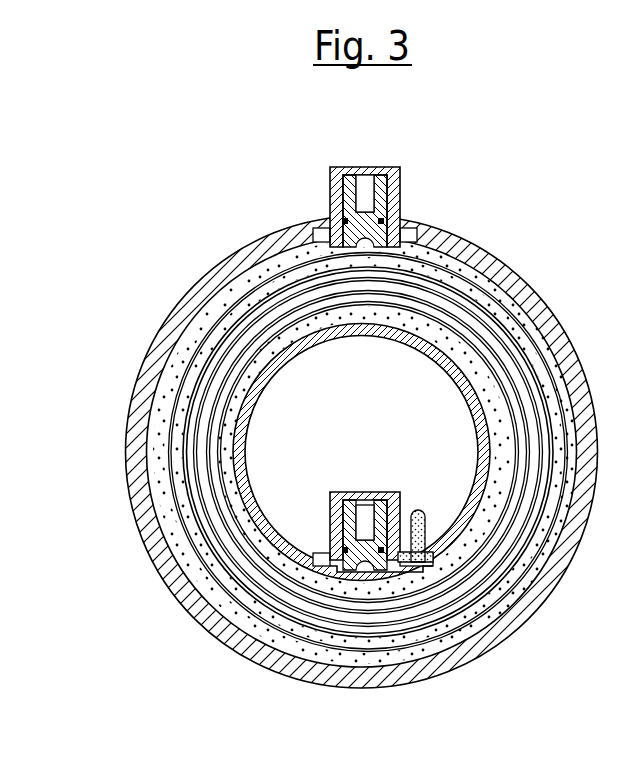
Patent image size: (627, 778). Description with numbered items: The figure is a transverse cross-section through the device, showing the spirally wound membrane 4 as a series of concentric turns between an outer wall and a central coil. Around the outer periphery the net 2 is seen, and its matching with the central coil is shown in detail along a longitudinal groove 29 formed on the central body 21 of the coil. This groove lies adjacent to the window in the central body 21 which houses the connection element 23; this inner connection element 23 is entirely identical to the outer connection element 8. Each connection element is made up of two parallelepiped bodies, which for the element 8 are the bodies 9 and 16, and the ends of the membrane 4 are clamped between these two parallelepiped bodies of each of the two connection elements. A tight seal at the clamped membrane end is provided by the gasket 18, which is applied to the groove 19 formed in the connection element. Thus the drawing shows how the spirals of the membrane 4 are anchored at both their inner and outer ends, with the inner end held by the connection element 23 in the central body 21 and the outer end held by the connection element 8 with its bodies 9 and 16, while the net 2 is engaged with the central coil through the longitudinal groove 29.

The net 2 is at (180, 370).
The membrane 4 is at (298, 597).
The connection element 8 is at (367, 192).
The parallelepiped body 9 is at (367, 199).
The parallelepiped body 16 is at (383, 170).
The gasket 18 is at (342, 223).
The groove 19 is at (345, 216).
The central body 21 is at (418, 512).
The connection element 23 is at (362, 520).
The longitudinal groove 29 is at (421, 530).